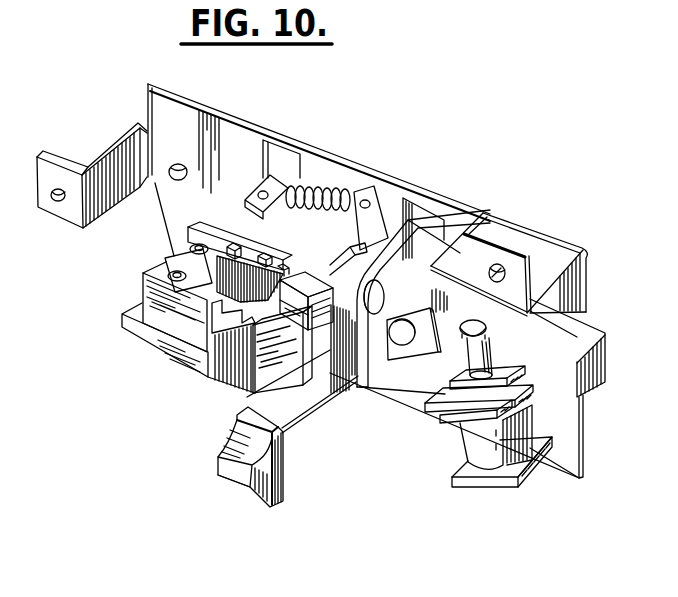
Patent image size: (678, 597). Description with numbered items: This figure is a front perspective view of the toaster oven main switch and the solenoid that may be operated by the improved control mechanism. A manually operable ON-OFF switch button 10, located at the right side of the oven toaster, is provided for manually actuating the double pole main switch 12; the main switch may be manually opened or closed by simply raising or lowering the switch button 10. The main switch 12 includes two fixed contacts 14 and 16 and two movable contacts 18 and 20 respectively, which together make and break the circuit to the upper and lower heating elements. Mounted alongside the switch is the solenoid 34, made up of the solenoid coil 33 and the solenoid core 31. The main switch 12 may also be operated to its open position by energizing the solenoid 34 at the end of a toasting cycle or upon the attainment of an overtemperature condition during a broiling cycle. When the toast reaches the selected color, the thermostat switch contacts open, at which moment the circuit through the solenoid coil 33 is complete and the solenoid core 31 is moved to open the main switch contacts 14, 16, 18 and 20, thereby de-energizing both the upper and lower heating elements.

The ON-OFF switch button 10 is at (240, 482).
The double pole main switch 12 is at (133, 344).
The fixed contact 14 is at (287, 320).
The fixed contact 16 is at (312, 297).
The movable contact 18 is at (203, 290).
The movable contact 20 is at (212, 266).
The solenoid core 31 is at (468, 366).
The solenoid coil 33 is at (488, 457).
The solenoid 34 is at (458, 442).